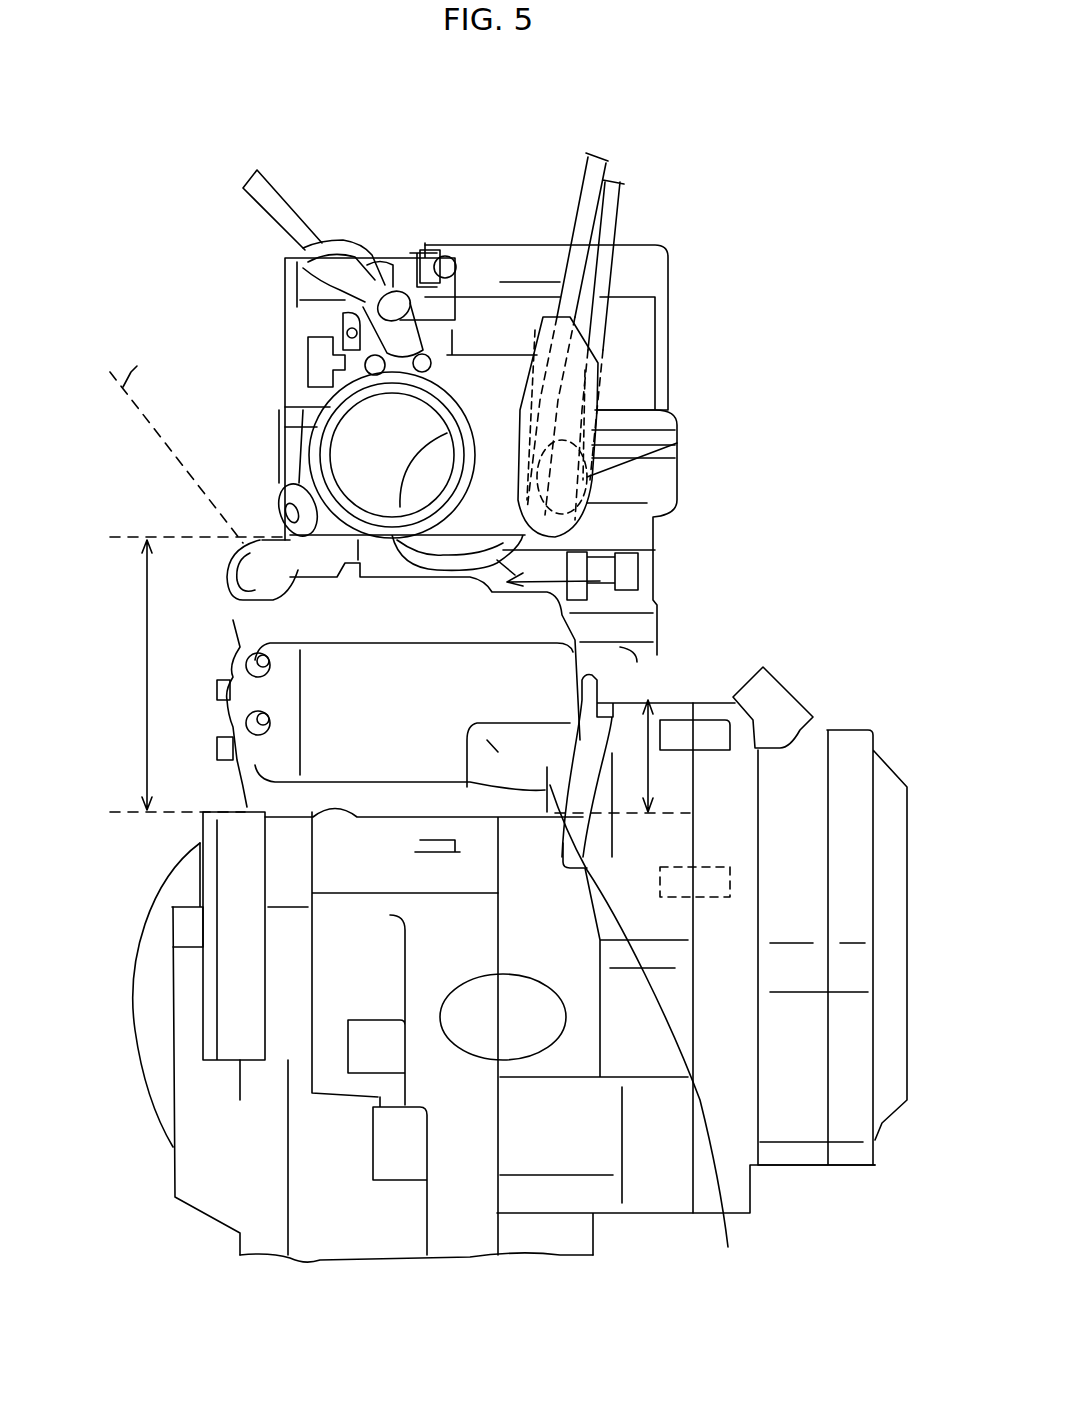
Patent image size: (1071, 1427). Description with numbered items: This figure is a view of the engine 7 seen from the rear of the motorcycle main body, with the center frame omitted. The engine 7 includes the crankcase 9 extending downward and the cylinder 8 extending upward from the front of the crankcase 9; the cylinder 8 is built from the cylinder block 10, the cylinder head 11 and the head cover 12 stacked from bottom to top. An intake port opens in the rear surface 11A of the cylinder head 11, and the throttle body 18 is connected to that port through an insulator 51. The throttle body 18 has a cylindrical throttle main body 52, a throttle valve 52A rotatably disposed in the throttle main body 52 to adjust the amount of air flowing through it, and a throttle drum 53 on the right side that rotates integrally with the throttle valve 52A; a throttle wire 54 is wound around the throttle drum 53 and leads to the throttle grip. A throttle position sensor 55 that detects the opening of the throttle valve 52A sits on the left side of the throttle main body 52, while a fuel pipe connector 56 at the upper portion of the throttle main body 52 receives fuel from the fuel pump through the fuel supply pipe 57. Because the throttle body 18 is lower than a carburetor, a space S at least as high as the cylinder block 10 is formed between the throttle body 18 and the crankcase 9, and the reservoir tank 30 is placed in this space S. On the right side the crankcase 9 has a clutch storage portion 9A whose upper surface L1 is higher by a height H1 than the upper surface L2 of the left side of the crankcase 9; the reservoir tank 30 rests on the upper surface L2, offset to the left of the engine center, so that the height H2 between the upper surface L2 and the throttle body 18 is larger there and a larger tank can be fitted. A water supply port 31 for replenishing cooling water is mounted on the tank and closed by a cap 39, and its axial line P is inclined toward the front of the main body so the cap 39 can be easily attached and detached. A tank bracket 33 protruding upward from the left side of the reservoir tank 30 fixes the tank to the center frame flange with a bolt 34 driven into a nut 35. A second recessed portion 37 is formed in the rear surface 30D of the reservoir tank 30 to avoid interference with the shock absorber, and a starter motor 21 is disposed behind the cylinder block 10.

The engine 7 is at (874, 1258).
The cylinder 8 is at (727, 426).
The crankcase 9 is at (642, 1200).
The clutch storage portion 9A is at (850, 772).
The cylinder block 10 is at (648, 632).
The cylinder head 11 is at (648, 487).
The rear surface of the cylinder head 11A is at (630, 532).
The head cover 12 is at (640, 325).
The throttle body 18 is at (494, 350).
The starter motor 21 is at (612, 683).
The reservoir tank 30 is at (263, 787).
The rear surface of the reservoir tank 30D is at (423, 742).
The water supply port 31 is at (277, 550).
The tank bracket 33 is at (250, 700).
The bolt 34 is at (238, 652).
The nut 35 is at (233, 620).
The second recessed portion 37 is at (653, 1031).
The cap 39 is at (240, 553).
The insulator 51 is at (650, 550).
The throttle main body 52 is at (420, 480).
The throttle valve 52A is at (335, 445).
The throttle drum 53 is at (690, 441).
The throttle wire 54 is at (620, 196).
The throttle position sensor 55 is at (297, 463).
The fuel pipe connector 56 is at (395, 305).
The fuel supply pipe 57 is at (280, 190).
The axial line of the water supply port P is at (176, 438).
The space S is at (660, 582).
The height H1 is at (650, 768).
The height H2 is at (145, 662).
The upper surface of the clutch storage portion L1 is at (590, 745).
The upper surface of the left side of the crankcase L2 is at (310, 818).